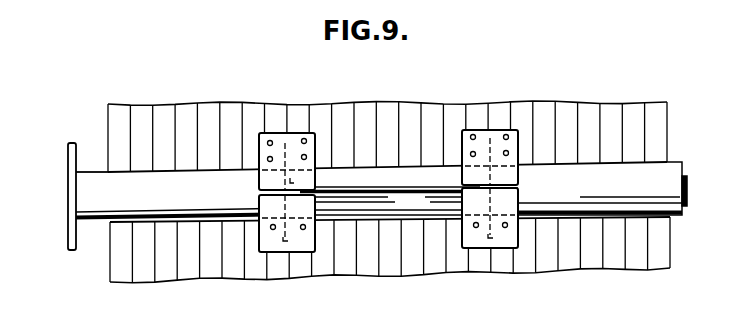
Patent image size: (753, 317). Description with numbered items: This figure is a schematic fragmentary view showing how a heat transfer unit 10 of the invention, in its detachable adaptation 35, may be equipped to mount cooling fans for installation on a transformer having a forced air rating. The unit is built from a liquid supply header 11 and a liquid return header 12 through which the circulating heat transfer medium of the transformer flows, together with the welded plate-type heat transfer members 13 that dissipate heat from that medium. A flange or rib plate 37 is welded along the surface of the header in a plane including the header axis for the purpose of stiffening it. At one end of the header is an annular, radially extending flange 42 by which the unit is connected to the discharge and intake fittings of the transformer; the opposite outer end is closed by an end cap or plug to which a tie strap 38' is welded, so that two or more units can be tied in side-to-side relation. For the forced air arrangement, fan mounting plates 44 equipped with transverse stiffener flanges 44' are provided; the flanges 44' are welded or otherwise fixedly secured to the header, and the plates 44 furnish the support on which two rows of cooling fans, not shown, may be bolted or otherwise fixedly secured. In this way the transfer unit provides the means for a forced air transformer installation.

The unit 10 is at (199, 280).
The upper liquid supply header 11 is at (121, 214).
The lower liquid return header 12 is at (657, 172).
The welded plate-type heat transfer members 13 is at (218, 117).
The detachable unit 35 is at (432, 283).
The flange plate 37 is at (387, 193).
The tie strap 38' is at (704, 190).
The annular radially extending flange 42 is at (68, 166).
The fan mounting plate 44 is at (368, 217).
The transverse stiffener flange 44' is at (420, 135).